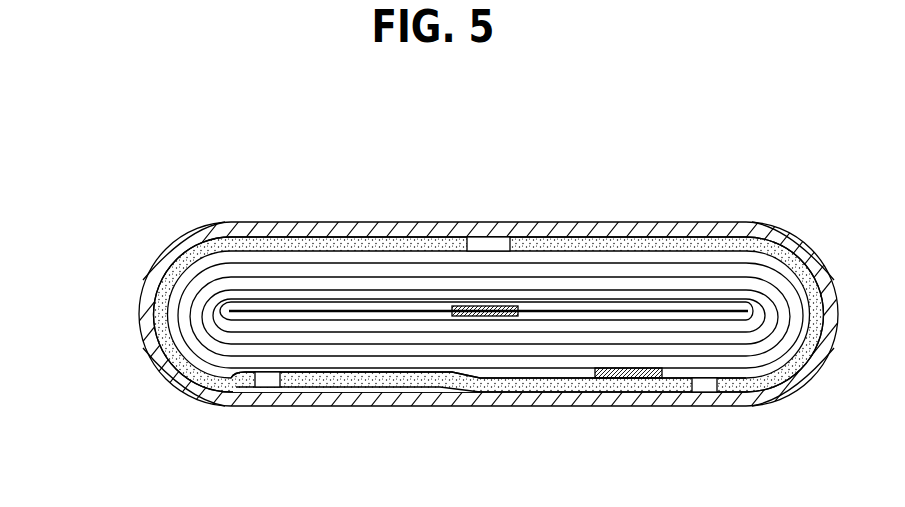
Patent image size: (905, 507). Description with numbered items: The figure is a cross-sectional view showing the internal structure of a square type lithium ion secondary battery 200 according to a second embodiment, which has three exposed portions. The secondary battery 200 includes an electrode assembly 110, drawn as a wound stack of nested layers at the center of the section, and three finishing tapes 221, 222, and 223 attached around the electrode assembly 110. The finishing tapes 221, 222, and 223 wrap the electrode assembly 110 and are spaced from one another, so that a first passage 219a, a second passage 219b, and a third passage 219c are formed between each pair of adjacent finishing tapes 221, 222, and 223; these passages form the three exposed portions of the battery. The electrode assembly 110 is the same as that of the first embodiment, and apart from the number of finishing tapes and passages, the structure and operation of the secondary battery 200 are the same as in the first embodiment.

The secondary battery 200 is at (87, 150).
The electrode assembly 110 is at (187, 333).
The finishing tape 221 is at (396, 374).
The finishing tape 222 is at (270, 247).
The finishing tape 223 is at (753, 240).
The first passage 219a is at (269, 402).
The second passage 219b is at (505, 236).
The third passage 219c is at (714, 398).